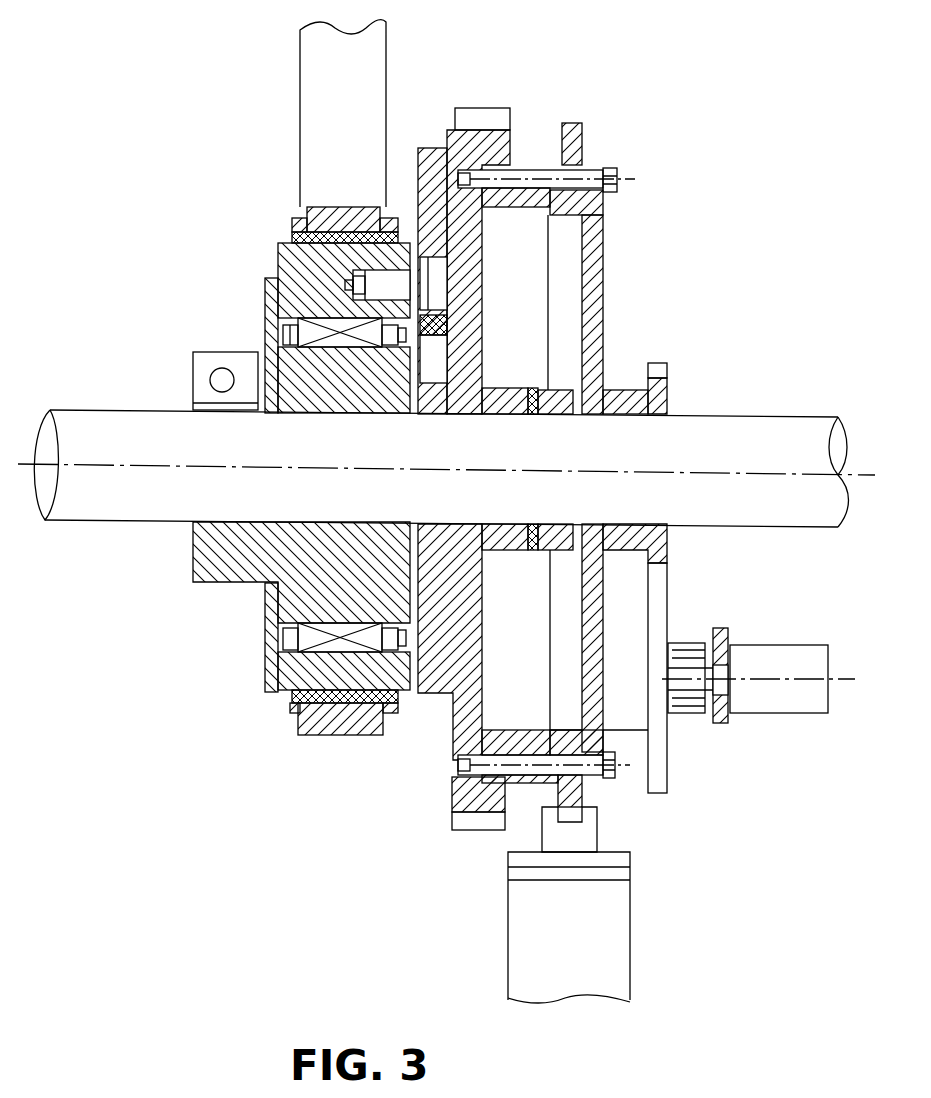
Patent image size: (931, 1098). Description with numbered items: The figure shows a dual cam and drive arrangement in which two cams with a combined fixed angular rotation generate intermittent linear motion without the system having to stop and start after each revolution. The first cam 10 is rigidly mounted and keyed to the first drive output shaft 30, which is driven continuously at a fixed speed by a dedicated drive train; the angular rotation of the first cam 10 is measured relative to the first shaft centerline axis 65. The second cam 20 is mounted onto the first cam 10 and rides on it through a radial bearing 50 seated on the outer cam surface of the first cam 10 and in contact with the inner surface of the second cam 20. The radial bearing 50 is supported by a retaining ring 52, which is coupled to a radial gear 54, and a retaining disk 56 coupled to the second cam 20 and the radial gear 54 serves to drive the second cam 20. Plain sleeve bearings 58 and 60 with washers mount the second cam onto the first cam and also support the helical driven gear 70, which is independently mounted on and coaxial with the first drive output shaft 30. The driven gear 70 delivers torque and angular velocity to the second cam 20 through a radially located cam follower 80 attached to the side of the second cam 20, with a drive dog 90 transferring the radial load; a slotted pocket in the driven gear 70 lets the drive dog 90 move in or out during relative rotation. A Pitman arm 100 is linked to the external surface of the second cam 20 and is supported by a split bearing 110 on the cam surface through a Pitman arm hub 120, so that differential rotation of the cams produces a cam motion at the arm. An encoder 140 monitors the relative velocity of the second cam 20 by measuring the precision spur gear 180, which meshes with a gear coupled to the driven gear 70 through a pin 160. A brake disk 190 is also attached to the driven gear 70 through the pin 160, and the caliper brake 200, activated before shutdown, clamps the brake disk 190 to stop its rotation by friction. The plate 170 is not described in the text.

The first cam 10 is at (207, 553).
The second cam 20 is at (280, 262).
The first drive output shaft 30 is at (100, 523).
The radial bearing 50 is at (330, 645).
The retaining ring 52 is at (385, 345).
The radial gear 54 is at (300, 330).
The retaining disk 56 is at (268, 295).
The plain sleeve bearing 58 is at (522, 390).
The plain sleeve bearing 60 is at (540, 398).
The first shaft centerline axis 65 is at (130, 455).
The helical driven gear 70 is at (516, 140).
The cam follower 80 is at (428, 268).
The drive dog 90 is at (437, 320).
The Pitman arm 100 is at (318, 48).
The split bearing 110 is at (307, 216).
The Pitman arm hub 120 is at (292, 236).
The encoder 140 is at (780, 680).
The pin 160 is at (546, 180).
The plate 170 is at (600, 717).
The precision spur gear 180 is at (668, 582).
The brake disk 190 is at (582, 128).
The caliper brake 200 is at (550, 835).